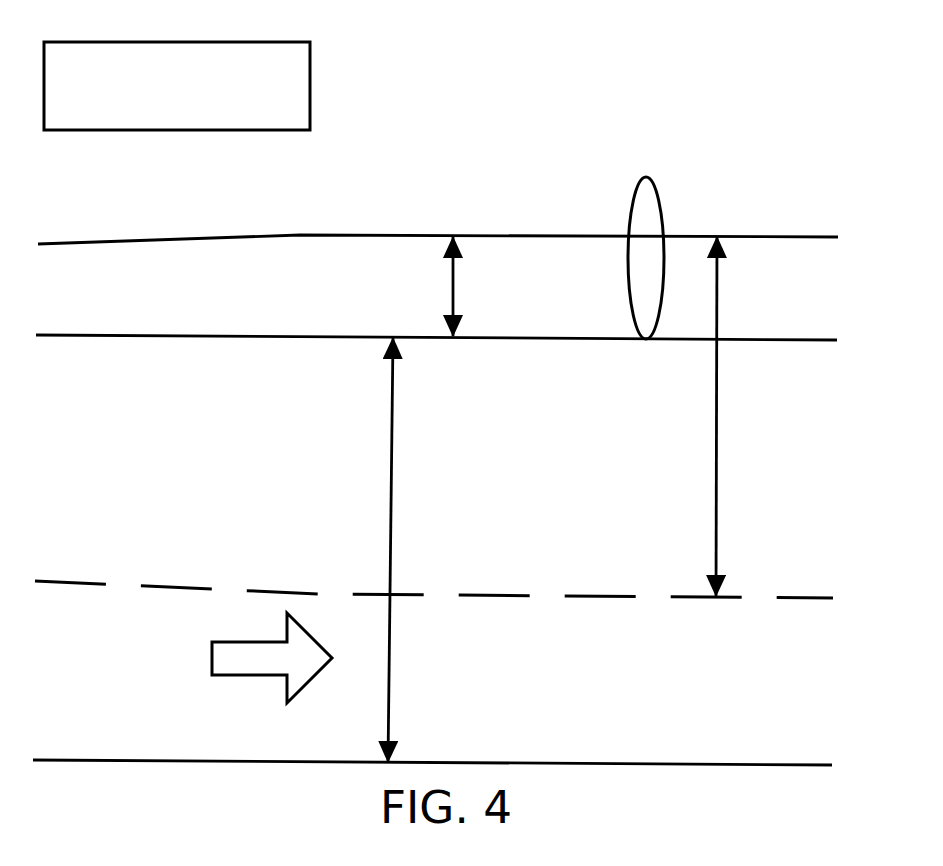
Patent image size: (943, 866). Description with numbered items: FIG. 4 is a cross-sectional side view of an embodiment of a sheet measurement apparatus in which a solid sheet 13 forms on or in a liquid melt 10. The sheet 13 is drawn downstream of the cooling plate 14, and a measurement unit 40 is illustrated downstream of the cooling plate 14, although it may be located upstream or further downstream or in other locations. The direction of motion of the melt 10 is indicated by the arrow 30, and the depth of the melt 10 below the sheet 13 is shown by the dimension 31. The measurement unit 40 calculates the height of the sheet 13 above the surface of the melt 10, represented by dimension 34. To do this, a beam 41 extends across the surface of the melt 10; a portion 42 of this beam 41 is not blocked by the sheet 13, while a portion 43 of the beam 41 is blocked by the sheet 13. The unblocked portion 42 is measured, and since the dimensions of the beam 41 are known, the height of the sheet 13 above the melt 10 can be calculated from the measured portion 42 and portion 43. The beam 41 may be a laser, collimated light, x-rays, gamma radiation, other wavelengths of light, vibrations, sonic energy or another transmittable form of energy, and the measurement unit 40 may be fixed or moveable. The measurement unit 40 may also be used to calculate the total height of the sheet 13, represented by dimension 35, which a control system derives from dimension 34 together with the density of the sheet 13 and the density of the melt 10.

The melt 10 is at (543, 694).
The sheet 13 is at (337, 289).
The cooling plate 14 is at (267, 96).
The melt flow direction 30 is at (300, 672).
The melt depth 31 is at (410, 550).
The dimension 34 is at (470, 286).
The dimension 35 is at (736, 416).
The measurement unit 40 is at (692, 82).
The beam 41 is at (675, 218).
The portion 42 is at (643, 217).
The portion 43 is at (643, 313).